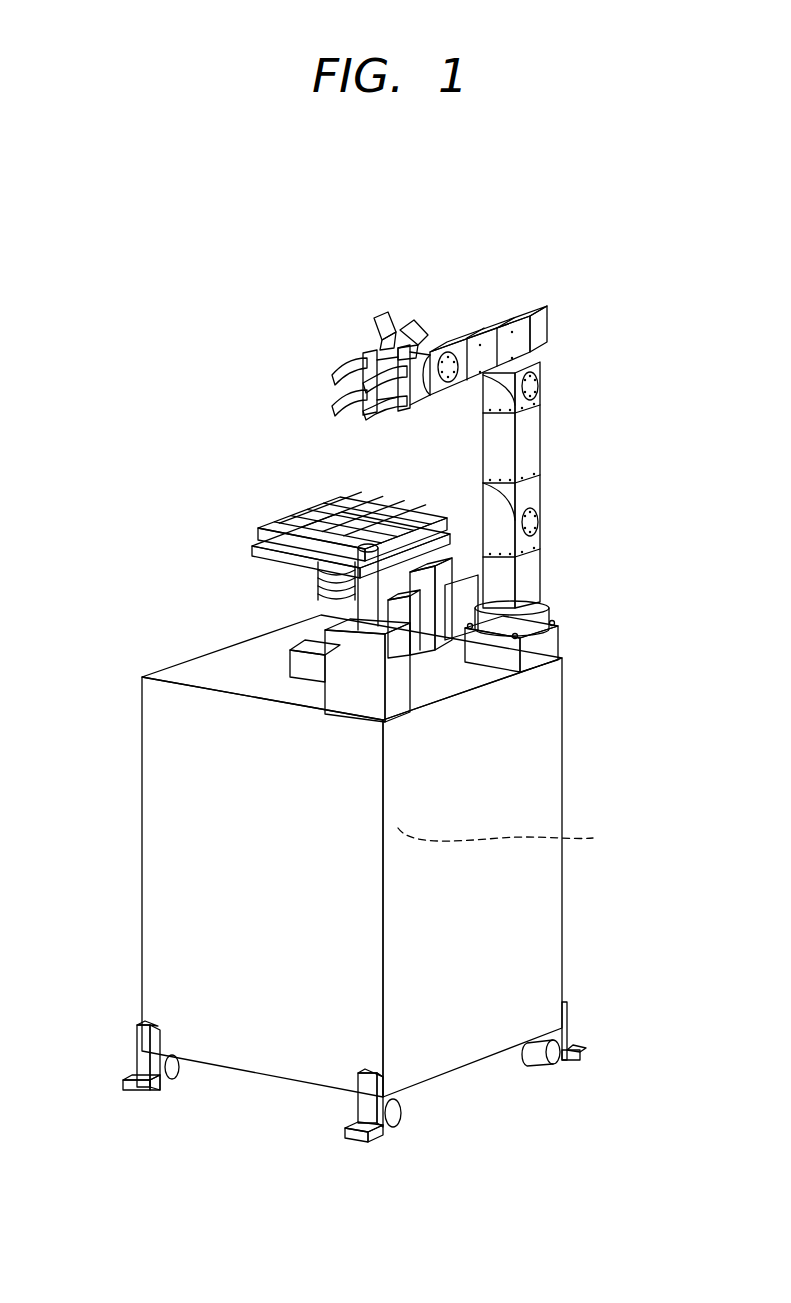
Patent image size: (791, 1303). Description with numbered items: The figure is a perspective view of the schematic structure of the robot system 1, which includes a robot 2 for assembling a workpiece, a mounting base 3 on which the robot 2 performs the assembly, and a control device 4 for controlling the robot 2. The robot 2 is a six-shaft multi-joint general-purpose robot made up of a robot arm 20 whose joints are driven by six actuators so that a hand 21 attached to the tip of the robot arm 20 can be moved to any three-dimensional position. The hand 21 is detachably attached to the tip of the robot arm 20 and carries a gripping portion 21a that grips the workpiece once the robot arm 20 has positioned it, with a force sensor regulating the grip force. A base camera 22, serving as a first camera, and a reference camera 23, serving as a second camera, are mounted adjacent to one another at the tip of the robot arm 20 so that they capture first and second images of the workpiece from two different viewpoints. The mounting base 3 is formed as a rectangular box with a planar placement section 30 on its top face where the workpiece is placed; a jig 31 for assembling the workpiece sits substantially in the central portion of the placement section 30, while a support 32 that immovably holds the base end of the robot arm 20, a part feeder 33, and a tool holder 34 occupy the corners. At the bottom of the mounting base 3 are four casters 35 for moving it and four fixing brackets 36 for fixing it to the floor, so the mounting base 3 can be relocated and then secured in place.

The robot system 1 is at (505, 215).
The robot 2 is at (532, 295).
The mounting base 3 is at (542, 768).
The control device 4 is at (528, 842).
The robot arm 20 is at (540, 443).
The hand 21 is at (335, 358).
The gripping portion 21a is at (340, 397).
The base camera 22 is at (382, 312).
The reference camera 23 is at (410, 320).
The placement section 30 is at (275, 632).
The jig 31 is at (300, 658).
The support 32 is at (555, 638).
The part feeder 33 is at (323, 500).
The tool holder 34 is at (338, 695).
The casters 35 is at (180, 1065).
The fixing brackets 36 is at (155, 1085).